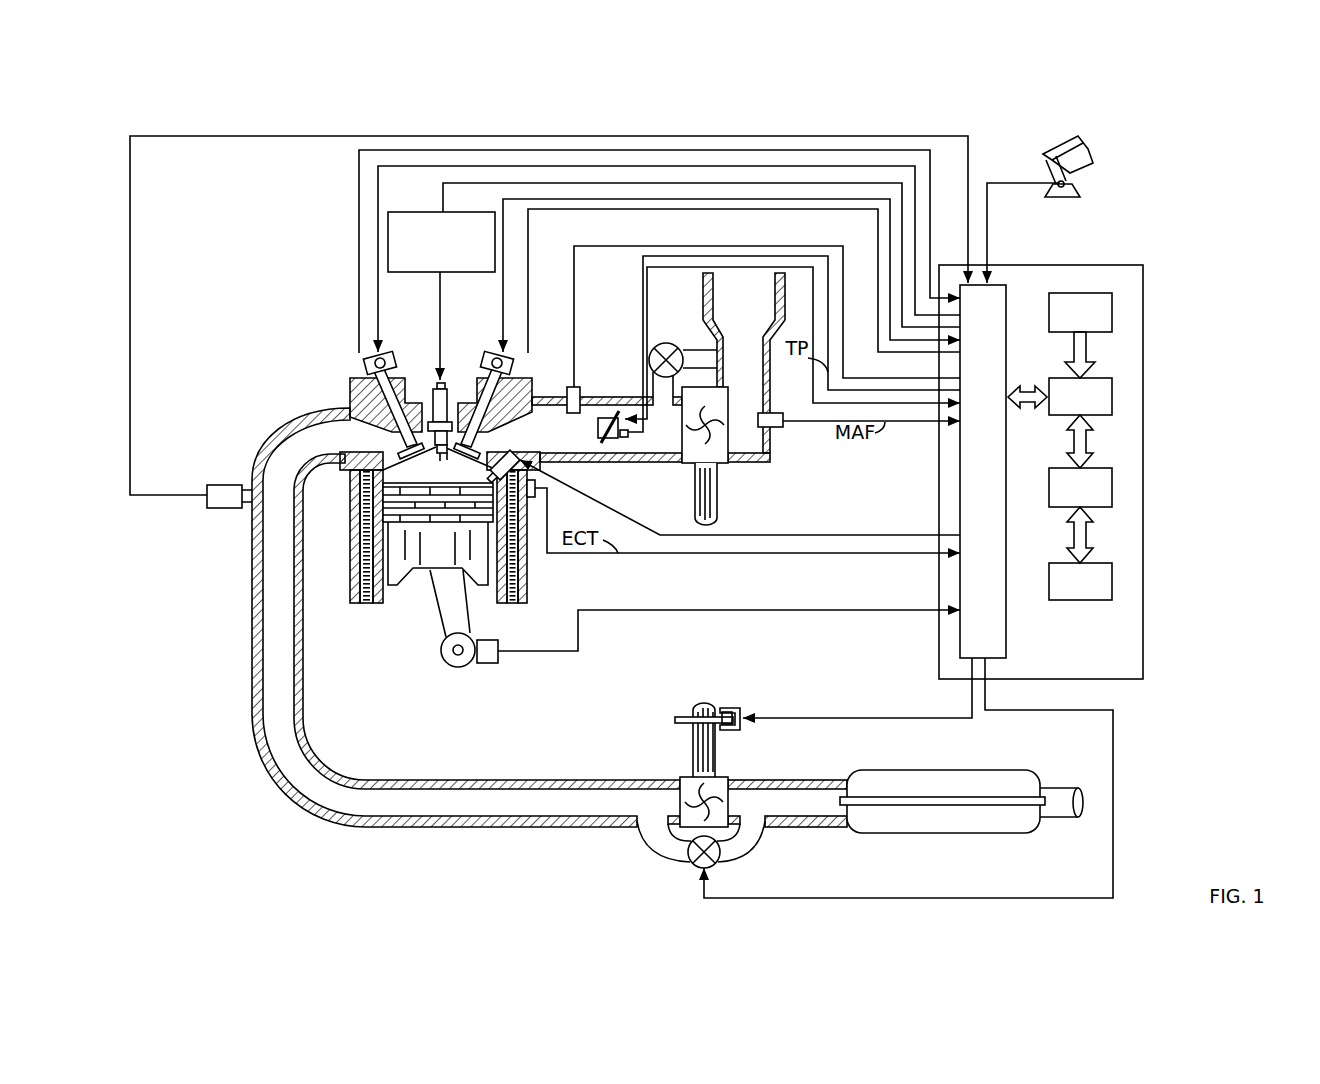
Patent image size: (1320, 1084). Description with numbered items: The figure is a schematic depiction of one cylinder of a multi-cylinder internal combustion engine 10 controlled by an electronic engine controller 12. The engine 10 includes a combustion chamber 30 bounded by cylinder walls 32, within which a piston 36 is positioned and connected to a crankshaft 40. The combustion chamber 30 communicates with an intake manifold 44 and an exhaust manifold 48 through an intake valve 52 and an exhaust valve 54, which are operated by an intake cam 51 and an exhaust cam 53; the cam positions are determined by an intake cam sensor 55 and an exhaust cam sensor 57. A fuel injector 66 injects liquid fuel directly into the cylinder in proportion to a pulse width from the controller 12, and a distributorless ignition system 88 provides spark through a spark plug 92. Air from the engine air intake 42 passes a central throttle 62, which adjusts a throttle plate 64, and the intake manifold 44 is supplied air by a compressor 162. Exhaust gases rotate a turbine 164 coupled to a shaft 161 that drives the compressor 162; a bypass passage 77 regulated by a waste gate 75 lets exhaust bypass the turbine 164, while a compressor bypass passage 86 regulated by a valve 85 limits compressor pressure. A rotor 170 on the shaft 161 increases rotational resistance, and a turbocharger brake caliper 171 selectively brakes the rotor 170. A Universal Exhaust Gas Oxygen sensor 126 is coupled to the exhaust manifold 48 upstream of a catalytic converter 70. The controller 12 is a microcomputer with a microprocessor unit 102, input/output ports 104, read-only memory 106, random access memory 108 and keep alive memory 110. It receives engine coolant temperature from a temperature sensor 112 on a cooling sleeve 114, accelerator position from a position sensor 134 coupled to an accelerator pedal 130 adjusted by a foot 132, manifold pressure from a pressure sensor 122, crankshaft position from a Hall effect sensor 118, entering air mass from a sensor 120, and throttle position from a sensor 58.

The internal combustion engine 10 is at (403, 496).
The electronic engine controller 12 is at (1143, 265).
The combustion chamber 30 is at (365, 566).
The cylinder walls 32 is at (453, 556).
The piston 36 is at (424, 558).
The crankshaft 40 is at (447, 667).
The engine air intake 42 is at (744, 363).
The intake manifold 44 is at (651, 429).
The exhaust manifold 48 is at (549, 617).
The intake cam 51 is at (507, 333).
The intake valve 52 is at (452, 392).
The exhaust cam 53 is at (368, 334).
The exhaust valve 54 is at (365, 428).
The intake cam sensor 55 is at (510, 366).
The exhaust cam sensor 57 is at (368, 368).
The throttle position sensor 58 is at (618, 442).
The central throttle 62 is at (601, 412).
The throttle plate 64 is at (615, 402).
The fuel injector 66 is at (538, 478).
The catalytic converter 70 is at (853, 833).
The waste gate 75 is at (712, 866).
The bypass passage 77 is at (656, 840).
The valve 85 is at (667, 343).
The compressor bypass passage 86 is at (700, 352).
The distributorless ignition system 88 is at (400, 212).
The spark plug 92 is at (434, 400).
The microprocessor unit 102 is at (1113, 400).
The input/output ports 104 is at (1008, 292).
The read-only memory 106 is at (1113, 310).
The random access memory 108 is at (1113, 488).
The keep alive memory 110 is at (1113, 580).
The temperature sensor 112 is at (534, 498).
The cooling sleeve 114 is at (523, 578).
The Hall effect sensor 118 is at (487, 663).
The air mass sensor 120 is at (776, 413).
The pressure sensor 122 is at (577, 387).
The Universal Exhaust Gas Oxygen sensor 126 is at (207, 488).
The accelerator pedal 130 is at (1097, 166).
The foot 132 is at (1090, 152).
The position sensor 134 is at (1067, 186).
The shaft 161 is at (717, 514).
The compressor 162 is at (727, 463).
The turbine 164 is at (680, 778).
The rotor 170 is at (688, 716).
The turbocharger brake caliper 171 is at (738, 708).